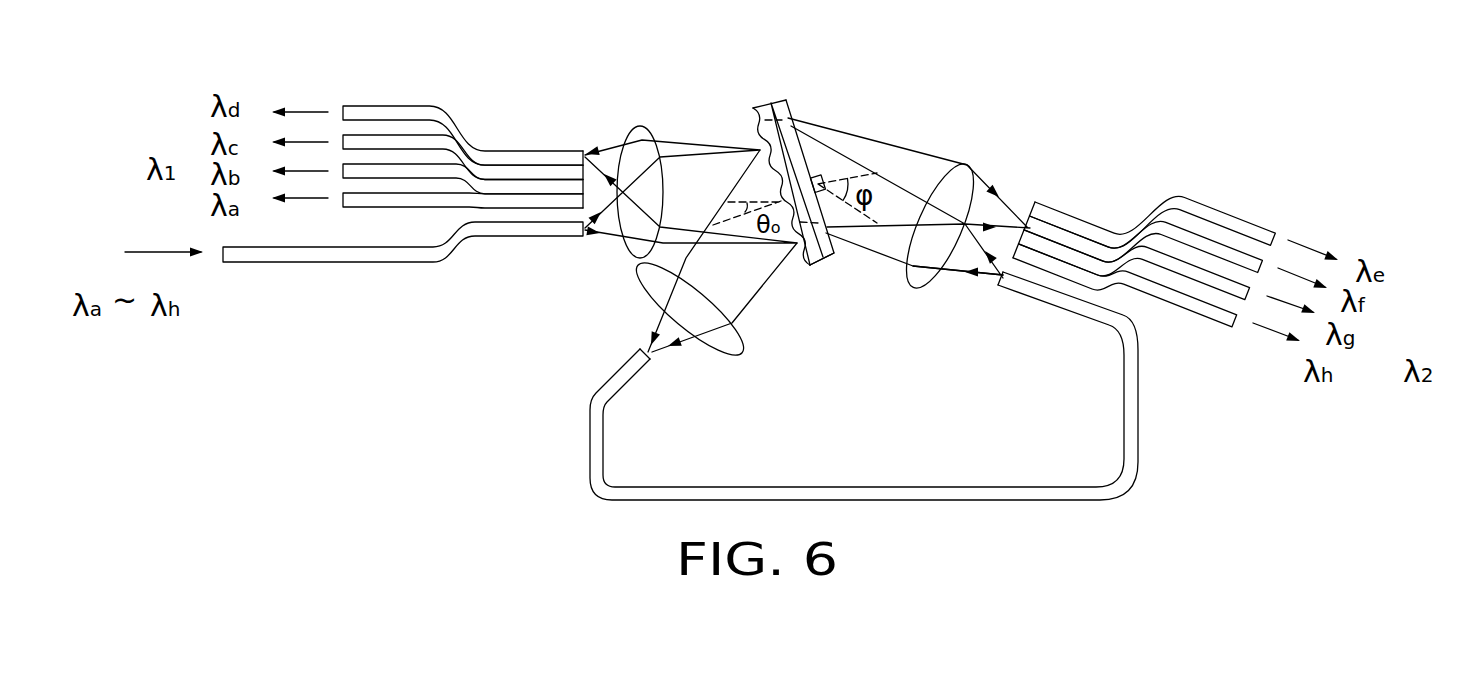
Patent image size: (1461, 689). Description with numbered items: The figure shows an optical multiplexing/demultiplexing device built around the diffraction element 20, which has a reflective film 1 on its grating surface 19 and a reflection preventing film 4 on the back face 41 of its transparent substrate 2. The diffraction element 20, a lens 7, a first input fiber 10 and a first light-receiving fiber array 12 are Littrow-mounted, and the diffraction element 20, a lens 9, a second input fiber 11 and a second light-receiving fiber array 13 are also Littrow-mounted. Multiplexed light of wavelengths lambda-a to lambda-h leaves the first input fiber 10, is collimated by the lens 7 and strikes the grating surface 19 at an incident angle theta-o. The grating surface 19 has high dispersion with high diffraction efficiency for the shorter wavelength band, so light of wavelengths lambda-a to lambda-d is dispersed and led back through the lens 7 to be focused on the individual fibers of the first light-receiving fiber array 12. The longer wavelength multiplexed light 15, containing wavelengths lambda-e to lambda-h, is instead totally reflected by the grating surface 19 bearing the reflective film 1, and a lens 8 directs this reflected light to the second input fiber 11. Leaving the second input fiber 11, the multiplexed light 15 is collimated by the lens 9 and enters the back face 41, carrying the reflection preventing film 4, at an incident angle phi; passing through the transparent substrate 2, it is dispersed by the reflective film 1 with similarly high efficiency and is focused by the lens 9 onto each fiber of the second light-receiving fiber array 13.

The reflective film 1 is at (805, 265).
The transparent substrate 2 is at (768, 113).
The reflection preventing film 4 is at (798, 152).
The lens 7 is at (653, 137).
The lens 8 is at (738, 355).
The lens 9 is at (967, 163).
The first input fiber 10 is at (527, 230).
The second input fiber 11 is at (1043, 293).
The first light-receiving fiber array 12 is at (512, 155).
The second light-receiving fiber array 13 is at (1078, 225).
The longer wavelength multiplexed light 15 is at (977, 280).
The grating surface 19 is at (748, 127).
The diffraction element 20 is at (822, 264).
The back face 41 is at (800, 153).